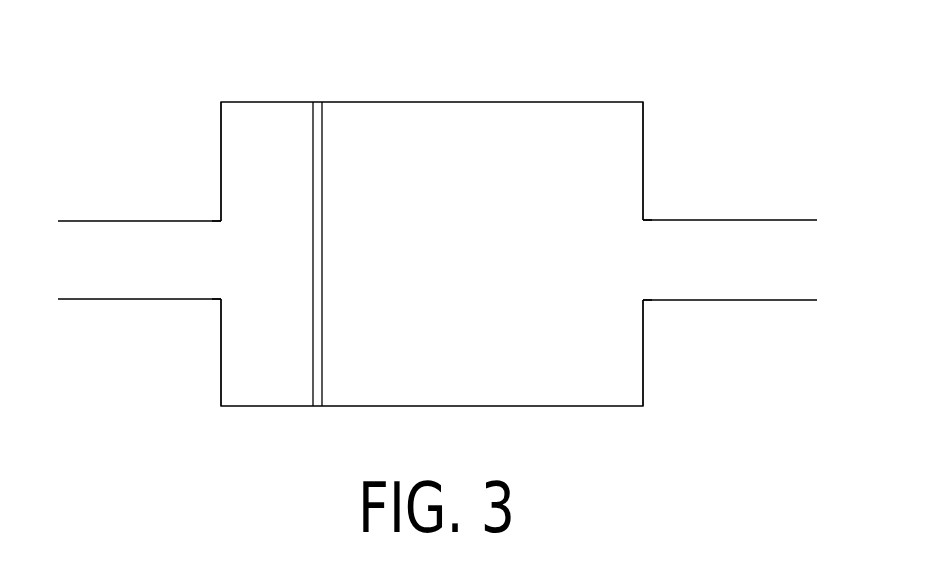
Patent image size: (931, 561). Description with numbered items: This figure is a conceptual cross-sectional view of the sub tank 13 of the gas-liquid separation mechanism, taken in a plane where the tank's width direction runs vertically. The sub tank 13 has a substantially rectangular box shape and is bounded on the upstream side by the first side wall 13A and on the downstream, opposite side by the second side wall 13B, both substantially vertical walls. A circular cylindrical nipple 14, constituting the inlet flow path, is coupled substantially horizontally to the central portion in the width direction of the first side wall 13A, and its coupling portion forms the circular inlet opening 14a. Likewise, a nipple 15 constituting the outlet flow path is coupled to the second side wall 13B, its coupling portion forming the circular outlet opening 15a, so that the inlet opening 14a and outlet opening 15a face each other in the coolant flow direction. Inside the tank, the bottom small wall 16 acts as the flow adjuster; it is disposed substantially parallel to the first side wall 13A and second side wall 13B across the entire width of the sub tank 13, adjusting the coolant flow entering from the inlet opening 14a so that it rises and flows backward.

The sub tank 13 is at (588, 100).
The first side wall 13A is at (644, 152).
The second side wall 13B is at (220, 163).
The nipple 14 is at (775, 218).
The inlet opening 14a is at (645, 262).
The nipple 15 is at (137, 300).
The outlet opening 15a is at (218, 253).
The bottom small wall 16 is at (322, 259).